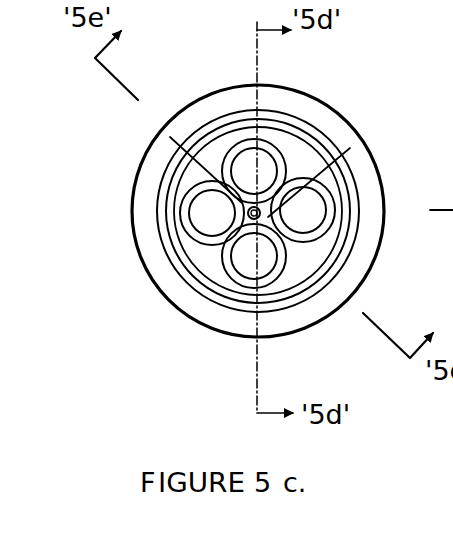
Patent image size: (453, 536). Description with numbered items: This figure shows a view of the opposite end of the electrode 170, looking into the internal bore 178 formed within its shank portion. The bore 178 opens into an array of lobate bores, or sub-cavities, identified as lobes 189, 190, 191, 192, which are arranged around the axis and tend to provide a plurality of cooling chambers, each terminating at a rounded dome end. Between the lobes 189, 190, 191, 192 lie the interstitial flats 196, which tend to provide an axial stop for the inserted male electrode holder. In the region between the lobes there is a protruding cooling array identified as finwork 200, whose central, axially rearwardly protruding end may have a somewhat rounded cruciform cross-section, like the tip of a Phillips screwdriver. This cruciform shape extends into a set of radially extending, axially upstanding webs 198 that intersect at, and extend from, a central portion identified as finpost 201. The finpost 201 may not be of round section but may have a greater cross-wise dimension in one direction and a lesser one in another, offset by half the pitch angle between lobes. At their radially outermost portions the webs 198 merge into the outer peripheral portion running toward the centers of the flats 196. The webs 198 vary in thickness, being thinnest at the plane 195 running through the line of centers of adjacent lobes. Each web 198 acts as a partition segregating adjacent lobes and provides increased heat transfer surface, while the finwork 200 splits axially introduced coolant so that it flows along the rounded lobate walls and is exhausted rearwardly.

The electrode 170 is at (149, 131).
The internal bore 178 is at (192, 210).
The lobe 189 is at (262, 165).
The lobe 190 is at (202, 226).
The lobe 191 is at (246, 262).
The lobe 192 is at (343, 174).
The plane 195 is at (358, 152).
The interstitial flats 196 is at (195, 153).
The webs 198 is at (228, 148).
The finwork 200 is at (263, 216).
The finpost 201 is at (272, 226).